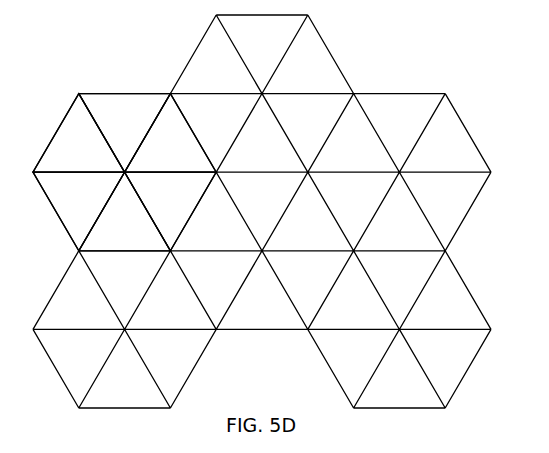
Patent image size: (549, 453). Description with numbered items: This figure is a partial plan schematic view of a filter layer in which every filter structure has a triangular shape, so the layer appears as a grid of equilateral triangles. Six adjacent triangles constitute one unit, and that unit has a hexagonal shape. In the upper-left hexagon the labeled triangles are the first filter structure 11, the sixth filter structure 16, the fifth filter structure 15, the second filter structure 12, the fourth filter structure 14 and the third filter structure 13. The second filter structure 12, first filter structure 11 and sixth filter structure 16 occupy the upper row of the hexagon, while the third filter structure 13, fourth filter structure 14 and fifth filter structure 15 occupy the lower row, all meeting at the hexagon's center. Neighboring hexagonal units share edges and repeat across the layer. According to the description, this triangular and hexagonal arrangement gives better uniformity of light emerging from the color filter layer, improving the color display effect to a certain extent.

The first filter structure 11 is at (125, 133).
The second filter structure 12 is at (79, 133).
The third filter structure 13 is at (79, 211).
The fourth filter structure 14 is at (125, 211).
The fifth filter structure 15 is at (171, 211).
The sixth filter structure 16 is at (171, 133).